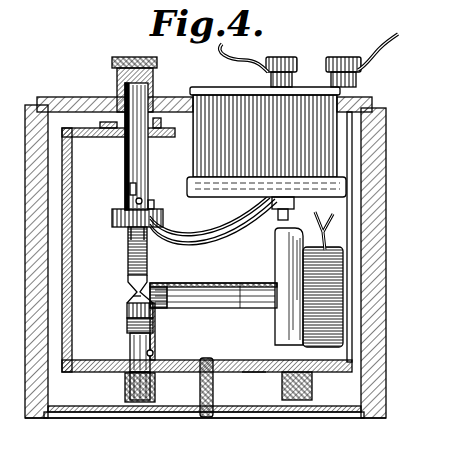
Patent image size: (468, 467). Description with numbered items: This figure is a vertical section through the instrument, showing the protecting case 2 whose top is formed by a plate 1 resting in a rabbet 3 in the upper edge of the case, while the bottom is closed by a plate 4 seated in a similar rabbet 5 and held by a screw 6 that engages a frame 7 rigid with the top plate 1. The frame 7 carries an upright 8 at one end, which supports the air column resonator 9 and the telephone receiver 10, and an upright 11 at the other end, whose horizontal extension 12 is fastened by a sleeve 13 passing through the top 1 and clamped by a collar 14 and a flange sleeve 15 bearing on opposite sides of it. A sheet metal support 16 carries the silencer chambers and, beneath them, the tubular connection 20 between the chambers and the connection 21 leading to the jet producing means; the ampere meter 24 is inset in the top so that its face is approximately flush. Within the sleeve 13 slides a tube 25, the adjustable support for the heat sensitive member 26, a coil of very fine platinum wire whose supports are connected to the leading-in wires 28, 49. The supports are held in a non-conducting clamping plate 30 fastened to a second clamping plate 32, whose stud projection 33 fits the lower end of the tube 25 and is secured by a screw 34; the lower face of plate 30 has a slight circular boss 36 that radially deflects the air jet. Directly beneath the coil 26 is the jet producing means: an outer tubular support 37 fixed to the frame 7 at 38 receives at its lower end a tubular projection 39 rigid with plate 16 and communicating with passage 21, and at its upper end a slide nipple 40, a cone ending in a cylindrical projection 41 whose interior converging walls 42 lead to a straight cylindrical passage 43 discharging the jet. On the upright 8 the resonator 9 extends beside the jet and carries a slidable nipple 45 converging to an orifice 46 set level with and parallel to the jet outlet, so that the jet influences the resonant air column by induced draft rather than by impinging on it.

The plate 1 is at (62, 97).
The protecting case 2 is at (376, 281).
The rabbet 3 is at (366, 106).
The bottom plate 4 is at (270, 418).
The rabbet 5 is at (376, 419).
The screw 6 is at (214, 391).
The frame 7 is at (185, 361).
The upright 8 is at (280, 248).
The air column resonator 9 is at (264, 304).
The telephone receiver 10 is at (318, 330).
The upright 11 is at (72, 279).
The horizontal extension 12 is at (102, 137).
The sleeve 13 is at (118, 120).
The collar 14 is at (156, 118).
The flange sleeve 15 is at (153, 93).
The sheet metal support 16 is at (250, 367).
The tubular connection 20 is at (313, 386).
The tubular connection 21 is at (126, 393).
The ampere meter 24 is at (328, 166).
The tube 25 is at (149, 162).
The heat sensitive member 26 is at (148, 260).
The leading-in wire 28 is at (208, 232).
The non-conducting clamping plate 30 is at (114, 216).
The clamping plate 32 is at (151, 209).
The stud projection 33 is at (131, 190).
The screw 34 is at (142, 198).
The circular boss 36 is at (134, 228).
The outer tubular support 37 is at (124, 352).
The connection 38 is at (126, 366).
The tubular projection 39 is at (151, 352).
The slide nipple 40 is at (127, 309).
The cylindrical projection 41 is at (133, 301).
The converging walls 42 is at (127, 322).
The cylindrical passage 43 is at (137, 293).
The nipple 45 is at (170, 284).
The orifice 46 is at (143, 290).
The leading-in wire 49 is at (208, 214).